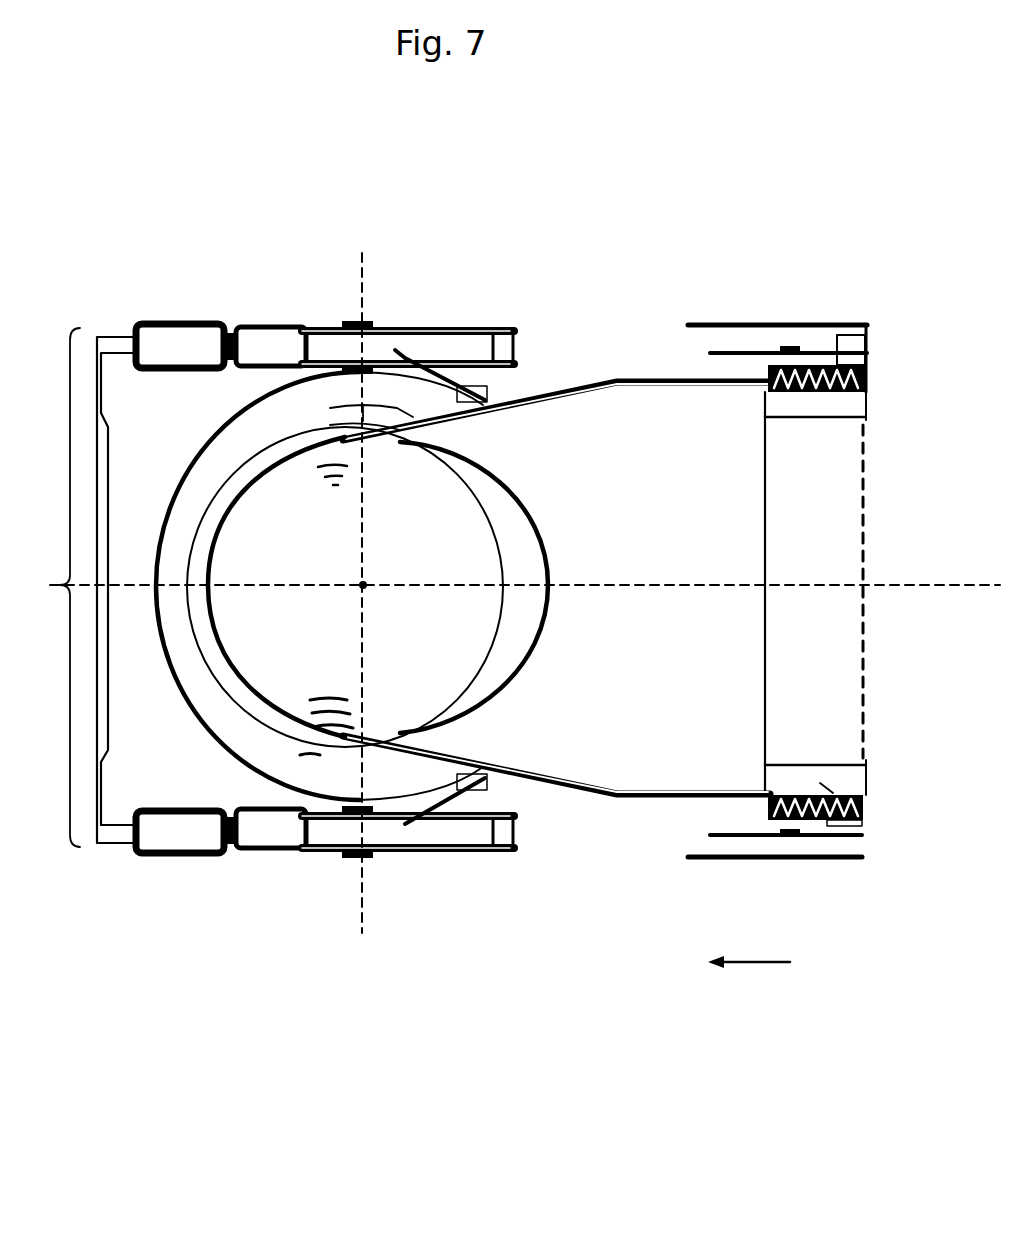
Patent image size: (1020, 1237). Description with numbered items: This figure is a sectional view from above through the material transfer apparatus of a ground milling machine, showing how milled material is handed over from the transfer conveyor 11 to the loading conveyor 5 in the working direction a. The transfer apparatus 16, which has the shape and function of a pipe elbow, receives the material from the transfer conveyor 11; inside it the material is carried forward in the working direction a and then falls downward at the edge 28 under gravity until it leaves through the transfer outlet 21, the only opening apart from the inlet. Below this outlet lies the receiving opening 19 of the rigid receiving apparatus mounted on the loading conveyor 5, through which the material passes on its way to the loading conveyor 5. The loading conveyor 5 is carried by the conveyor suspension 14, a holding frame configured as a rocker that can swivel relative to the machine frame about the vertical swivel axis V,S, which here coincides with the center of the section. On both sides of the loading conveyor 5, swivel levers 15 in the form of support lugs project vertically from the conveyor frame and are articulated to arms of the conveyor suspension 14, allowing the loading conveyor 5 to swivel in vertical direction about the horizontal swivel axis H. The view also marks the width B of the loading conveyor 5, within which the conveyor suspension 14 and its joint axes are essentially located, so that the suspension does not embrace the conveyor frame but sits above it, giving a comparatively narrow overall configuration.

The loading conveyor 5 is at (285, 525).
The transfer conveyor 11 is at (862, 858).
The conveyor suspension 14 is at (165, 350).
The swivel lever 15 is at (405, 355).
The transfer apparatus 16 is at (540, 437).
The receiving opening 19 is at (280, 742).
The transfer outlet 21 is at (424, 534).
The edge 28 is at (550, 622).
The width B is at (51, 587).
The horizontal swivel axis H is at (362, 900).
The vertical swivel axis / swivel axis V,S is at (364, 590).
The working direction a is at (736, 967).